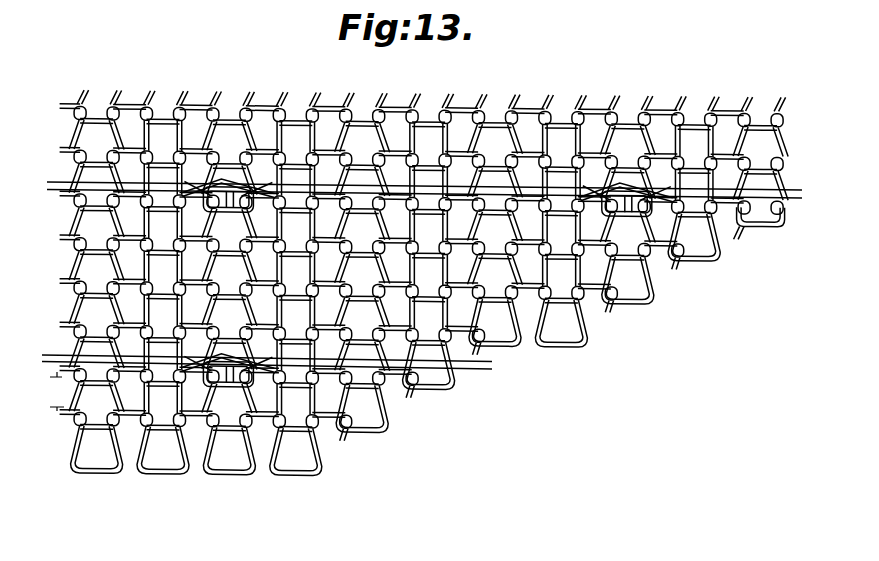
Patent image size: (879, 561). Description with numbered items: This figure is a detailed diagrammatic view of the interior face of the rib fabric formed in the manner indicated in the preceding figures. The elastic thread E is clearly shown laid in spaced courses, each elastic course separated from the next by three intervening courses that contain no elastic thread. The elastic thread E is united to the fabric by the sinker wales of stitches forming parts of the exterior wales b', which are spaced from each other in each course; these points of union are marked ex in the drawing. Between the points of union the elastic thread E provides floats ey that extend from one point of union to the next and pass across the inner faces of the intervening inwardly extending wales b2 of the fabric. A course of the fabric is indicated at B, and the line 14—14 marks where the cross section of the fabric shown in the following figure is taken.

The section line 14— 14 is at (60, 177).
The course of knitted fabric B is at (55, 391).
The elastic thread E is at (476, 402).
The crossing point of inlaid yarn ex is at (429, 288).
The floats ey is at (361, 392).
The exterior wales b' is at (419, 288).
The inwardly extending wales b2 is at (422, 288).